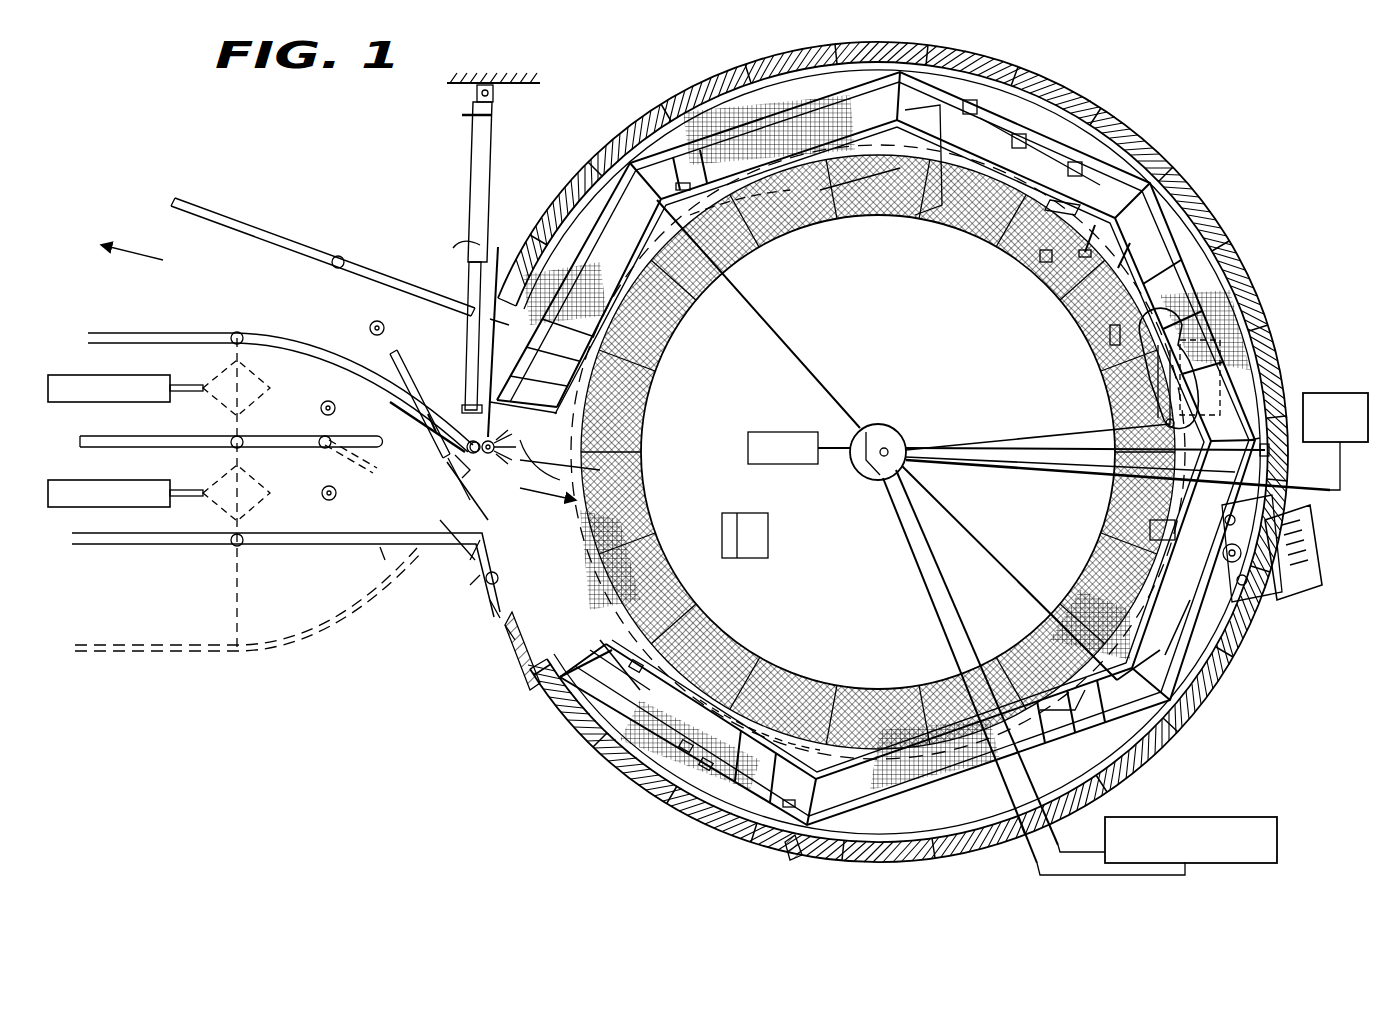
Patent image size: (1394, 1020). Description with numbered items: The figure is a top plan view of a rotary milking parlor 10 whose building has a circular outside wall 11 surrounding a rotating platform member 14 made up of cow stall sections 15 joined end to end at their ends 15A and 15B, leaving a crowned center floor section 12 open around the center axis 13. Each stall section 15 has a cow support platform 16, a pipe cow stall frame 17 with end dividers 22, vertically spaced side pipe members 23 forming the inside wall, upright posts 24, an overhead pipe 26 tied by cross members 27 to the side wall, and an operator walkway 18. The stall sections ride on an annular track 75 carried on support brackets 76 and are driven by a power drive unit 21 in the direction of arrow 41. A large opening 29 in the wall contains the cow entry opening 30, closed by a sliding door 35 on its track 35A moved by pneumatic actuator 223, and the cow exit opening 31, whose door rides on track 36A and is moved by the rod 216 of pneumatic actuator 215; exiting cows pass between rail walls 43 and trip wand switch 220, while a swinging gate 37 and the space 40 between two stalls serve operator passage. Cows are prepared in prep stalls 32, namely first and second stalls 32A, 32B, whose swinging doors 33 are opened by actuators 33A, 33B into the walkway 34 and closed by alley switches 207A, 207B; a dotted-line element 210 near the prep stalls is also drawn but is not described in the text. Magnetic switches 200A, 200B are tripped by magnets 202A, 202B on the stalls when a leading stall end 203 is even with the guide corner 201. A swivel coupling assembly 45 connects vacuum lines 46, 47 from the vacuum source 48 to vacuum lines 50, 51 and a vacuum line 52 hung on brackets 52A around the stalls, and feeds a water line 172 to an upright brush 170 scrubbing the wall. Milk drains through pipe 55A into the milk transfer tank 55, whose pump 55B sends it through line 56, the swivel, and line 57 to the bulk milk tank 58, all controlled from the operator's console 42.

The milking parlor 10 is at (1212, 188).
The circular outside wall 11 is at (705, 70).
The center floor section 12 is at (915, 314).
The center axis 13 is at (890, 445).
The rotating platform member 14 is at (1078, 322).
The cow stall section 15 is at (835, 218).
The stall section end 15A is at (880, 150).
The stall section end 15B is at (745, 250).
The cow support platform 16 is at (748, 108).
The cow stall frame 17 is at (648, 215).
The operator walkway 18 is at (690, 310).
The power drive unit 21 is at (1285, 605).
The end dividers 22 is at (815, 790).
The side pipe members 23 is at (555, 495).
The upright posts 24 is at (575, 420).
The overhead pipe 26 is at (640, 752).
The cross members 27 is at (700, 790).
The large opening 29 is at (580, 500).
The cow entry opening 30 is at (457, 520).
The cow exit opening 31 is at (520, 352).
The prep stalls 32 is at (205, 622).
The first prep stall 32A is at (72, 520).
The second prep stall 32B is at (95, 338).
The swinging doors 33 is at (243, 440).
The actuator 33A is at (122, 476).
The actuator 33B is at (120, 402).
The walkway 34 is at (377, 517).
The sliding door 35 is at (420, 437).
The track 35A is at (465, 470).
The track 36A is at (450, 380).
The swinging gate 37 is at (495, 618).
The operator passage space 40 is at (1040, 660).
The arrow 41 is at (743, 630).
The operator's console 42 is at (768, 540).
The rail walls 43 is at (225, 222).
The swivel coupling assembly 45 is at (884, 428).
The vacuum line 46 is at (890, 540).
The vacuum line 47 is at (955, 555).
The vacuum source 48 is at (1250, 818).
The vacuum line 50 is at (805, 365).
The vacuum line 51 is at (970, 530).
The vacuum line 52 is at (1140, 755).
The brackets 52A is at (700, 690).
The milk transfer tank 55 is at (1150, 380).
The milk pipe 55A is at (1140, 520).
The pump 55B is at (1240, 350).
The milk line 56 is at (1040, 432).
The milk line 57 is at (985, 472).
The bulk milk tank 58 is at (1330, 390).
The annular track 75 is at (1005, 140).
The support brackets 76 is at (1012, 165).
The upright brush 170 is at (1290, 400).
The water line 172 is at (1130, 425).
The magnetic switch 200A is at (690, 775).
The magnetic switch 200B is at (650, 690).
The guide corner 201 is at (477, 580).
The magnet 202A is at (785, 838).
The magnet 202B is at (530, 680).
The leading end of stall 203 is at (600, 470).
The switch 207A is at (329, 502).
The switch 207B is at (322, 412).
The gate path 210 is at (380, 547).
The pneumatic actuator 215 is at (476, 157).
The extendable rod 216 is at (477, 270).
The wand switch 220 is at (369, 322).
The pneumatic actuator 223 is at (452, 400).